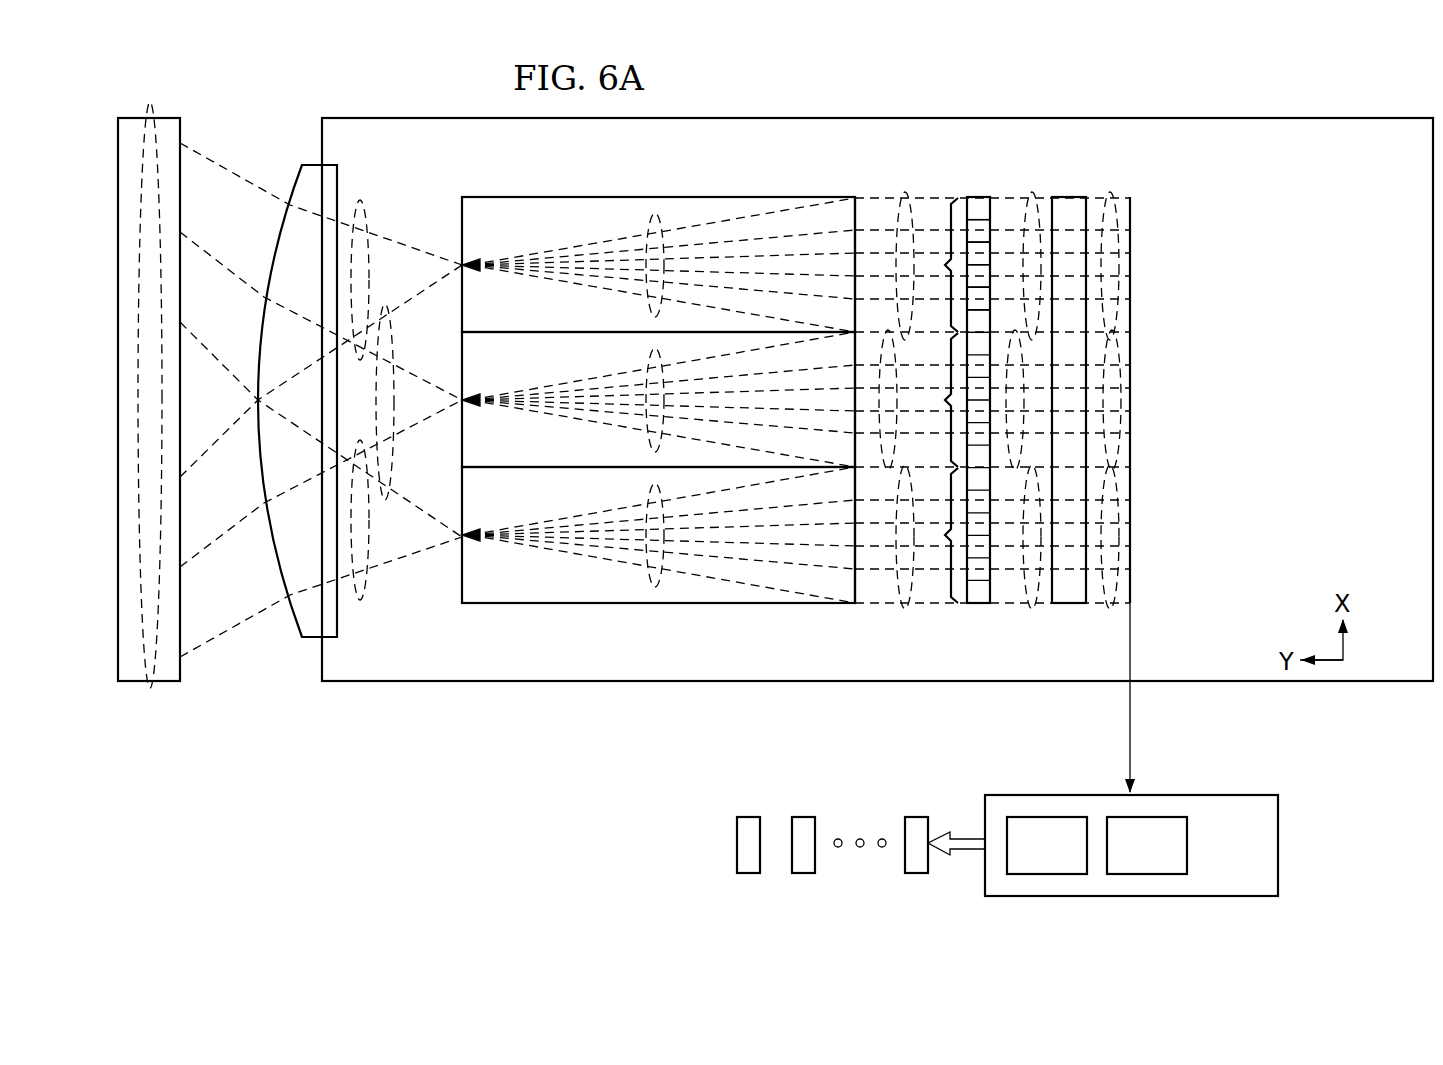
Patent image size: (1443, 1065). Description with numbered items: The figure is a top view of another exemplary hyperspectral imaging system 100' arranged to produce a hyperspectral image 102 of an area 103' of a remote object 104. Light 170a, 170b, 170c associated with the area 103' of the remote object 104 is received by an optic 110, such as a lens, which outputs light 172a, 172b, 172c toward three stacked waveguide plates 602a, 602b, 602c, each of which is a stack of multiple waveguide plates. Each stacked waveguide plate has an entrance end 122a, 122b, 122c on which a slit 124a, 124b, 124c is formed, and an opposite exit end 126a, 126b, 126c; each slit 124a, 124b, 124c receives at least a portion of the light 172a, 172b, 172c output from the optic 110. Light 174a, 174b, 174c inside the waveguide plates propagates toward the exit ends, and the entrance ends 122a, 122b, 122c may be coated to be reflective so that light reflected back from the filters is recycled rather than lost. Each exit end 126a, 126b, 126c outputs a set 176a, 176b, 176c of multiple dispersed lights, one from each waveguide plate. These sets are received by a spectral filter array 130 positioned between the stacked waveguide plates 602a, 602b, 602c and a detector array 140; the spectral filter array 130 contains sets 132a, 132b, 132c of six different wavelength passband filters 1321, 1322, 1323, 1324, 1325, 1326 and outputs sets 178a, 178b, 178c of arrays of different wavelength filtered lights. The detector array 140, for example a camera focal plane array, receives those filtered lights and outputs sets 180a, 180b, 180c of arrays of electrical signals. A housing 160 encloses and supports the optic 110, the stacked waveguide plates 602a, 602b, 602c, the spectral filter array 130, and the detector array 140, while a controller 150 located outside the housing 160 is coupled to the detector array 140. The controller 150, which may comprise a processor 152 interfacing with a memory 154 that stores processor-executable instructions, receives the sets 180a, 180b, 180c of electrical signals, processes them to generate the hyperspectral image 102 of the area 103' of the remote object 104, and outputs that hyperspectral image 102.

The hyperspectral imaging system 100' is at (288, 40).
The area of the remote object 103' is at (139, 369).
The remote object 104 is at (164, 703).
The optic 110 is at (297, 183).
The light 170a is at (210, 156).
The light 170b is at (203, 251).
The light 170c is at (205, 347).
The light output from the optic 172a is at (360, 200).
The light output from the optic 172b is at (385, 303).
The light output from the optic 172c is at (362, 600).
The entrance end 122a is at (458, 213).
The entrance end 122b is at (456, 378).
The entrance end 122c is at (456, 587).
The stacked waveguide plate 602a is at (536, 236).
The stacked waveguide plate 602b is at (536, 371).
The stacked waveguide plate 602c is at (536, 506).
The light inside the waveguide plates 174a is at (648, 232).
The light inside the waveguide plates 174b is at (648, 367).
The light inside the waveguide plates 174c is at (648, 502).
The slit 124a is at (466, 270).
The slit 124b is at (466, 405).
The slit 124c is at (466, 540).
The exit end 126a is at (860, 214).
The exit end 126b is at (860, 378).
The exit end 126c is at (860, 588).
The set of multiple dispersed lights 176a is at (906, 194).
The set of multiple dispersed lights 176b is at (888, 332).
The set of multiple dispersed lights 176c is at (906, 608).
The set of different wavelength passband filters 132a is at (944, 265).
The set of different wavelength passband filters 132b is at (942, 400).
The set of different wavelength passband filters 132c is at (942, 537).
The wavelength passband filter 1321 is at (976, 197).
The wavelength passband filter 1322 is at (988, 228).
The wavelength passband filter 1323 is at (988, 250).
The wavelength passband filter 1324 is at (988, 268).
The wavelength passband filter 1325 is at (988, 295).
The wavelength passband filter 1326 is at (988, 322).
The spectral filter array 130 is at (978, 607).
The set of multiple arrays of different wavelength filtered lights 178a is at (1040, 242).
The set of multiple arrays of different wavelength filtered lights 178b is at (1023, 427).
The set of multiple arrays of different wavelength filtered lights 178c is at (1032, 608).
The detector array 140 is at (1070, 604).
The set of arrays of electrical signals 180a is at (1118, 188).
The set of arrays of electrical signals 180b is at (1115, 372).
The set of arrays of electrical signals 180c is at (1115, 545).
The housing 160 is at (1240, 116).
The controller 150 is at (1254, 858).
The processor 152 is at (1069, 858).
The memory 154 is at (1169, 858).
The hyperspectral image 102 is at (749, 874).